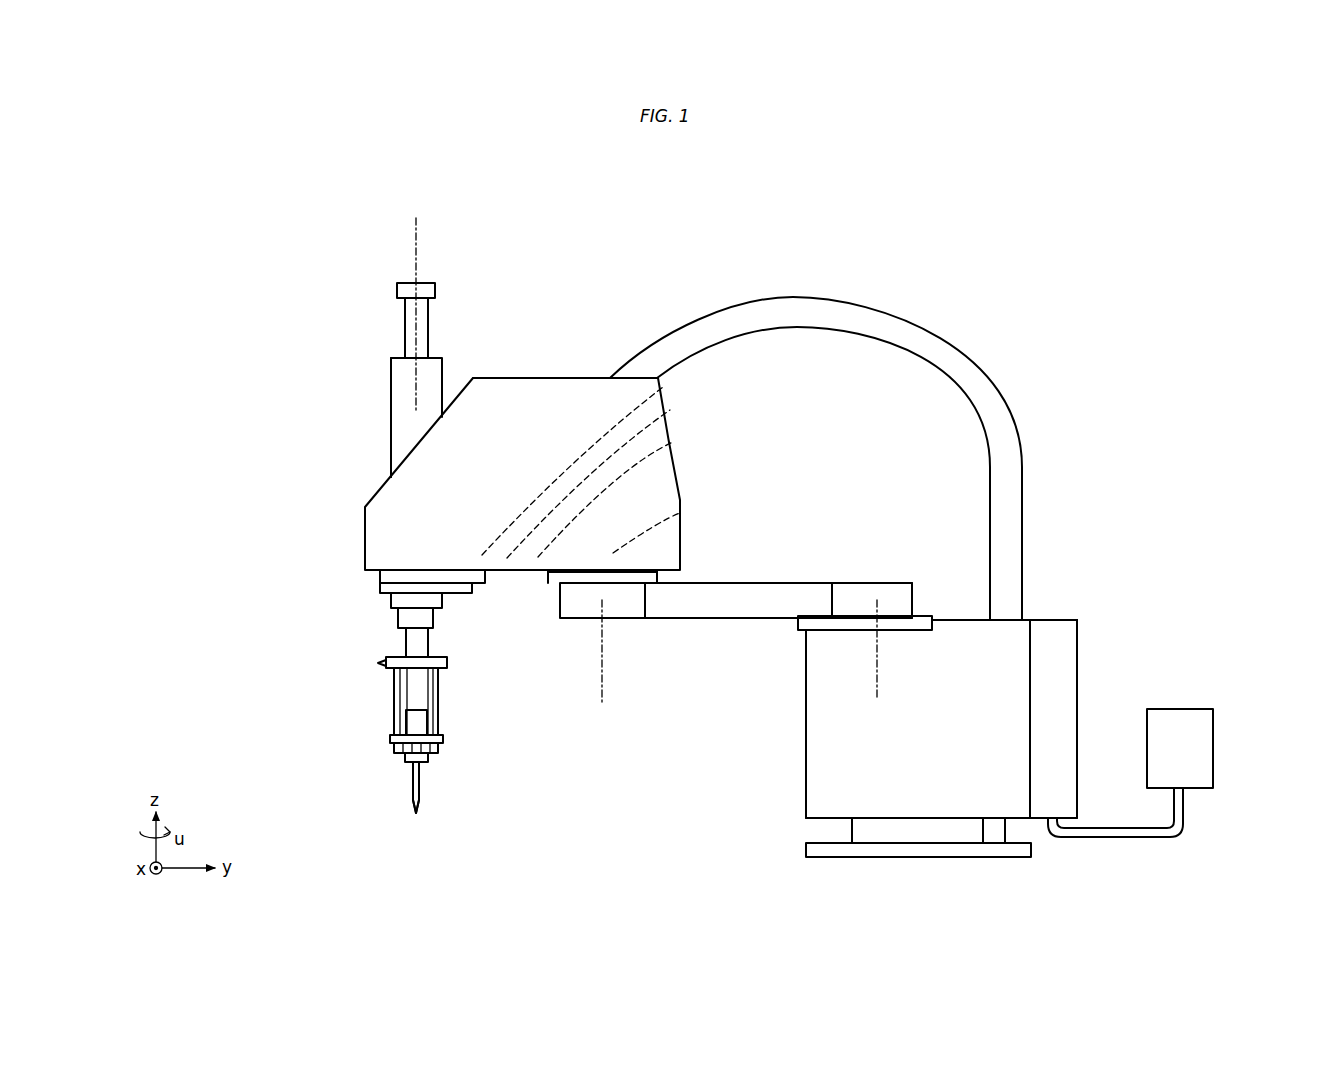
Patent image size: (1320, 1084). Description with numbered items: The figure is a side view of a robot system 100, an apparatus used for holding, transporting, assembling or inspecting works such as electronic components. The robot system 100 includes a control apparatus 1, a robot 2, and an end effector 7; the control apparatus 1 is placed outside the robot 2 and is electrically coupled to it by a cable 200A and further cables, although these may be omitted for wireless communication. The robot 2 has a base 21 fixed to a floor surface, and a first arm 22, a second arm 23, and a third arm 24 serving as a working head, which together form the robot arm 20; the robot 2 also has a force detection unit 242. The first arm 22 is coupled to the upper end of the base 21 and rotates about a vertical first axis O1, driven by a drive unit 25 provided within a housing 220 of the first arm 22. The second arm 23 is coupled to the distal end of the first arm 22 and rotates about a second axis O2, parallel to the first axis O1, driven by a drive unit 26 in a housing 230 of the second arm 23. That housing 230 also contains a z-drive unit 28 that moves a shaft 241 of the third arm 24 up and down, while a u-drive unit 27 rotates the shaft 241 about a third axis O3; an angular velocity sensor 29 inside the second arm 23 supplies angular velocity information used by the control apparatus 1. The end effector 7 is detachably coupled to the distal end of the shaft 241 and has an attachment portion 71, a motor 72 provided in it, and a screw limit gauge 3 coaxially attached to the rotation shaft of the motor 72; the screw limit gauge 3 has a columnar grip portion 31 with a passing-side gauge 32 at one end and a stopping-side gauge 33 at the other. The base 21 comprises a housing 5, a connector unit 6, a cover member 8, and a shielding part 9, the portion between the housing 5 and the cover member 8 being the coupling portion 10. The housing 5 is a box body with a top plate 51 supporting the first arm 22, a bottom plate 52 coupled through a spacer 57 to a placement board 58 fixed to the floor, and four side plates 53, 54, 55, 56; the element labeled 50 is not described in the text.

The control apparatus 1 is at (1195, 619).
The robot 2 is at (619, 270).
The robot arm 20 is at (748, 212).
The base 21 is at (806, 795).
The first arm 22 is at (685, 600).
The second arm 23 is at (468, 448).
The third arm 24 is at (405, 318).
The shaft 241 is at (404, 335).
The force detection unit 242 is at (413, 507).
The drive unit 25 is at (885, 595).
The drive unit 26 is at (680, 513).
The u-drive unit 27 is at (673, 442).
The z-drive unit 28 is at (670, 410).
The angular velocity sensor 29 is at (663, 387).
The housing 220 is at (803, 600).
The housing 230 is at (511, 374).
The screw limit gauge 3 is at (407, 766).
The grip portion 31 is at (412, 787).
The passing-side gauge 32 is at (414, 806).
The stopping-side gauge 33 is at (420, 780).
The housing 5 is at (800, 812).
The control unit 50 is at (968, 727).
The top plate 51 is at (962, 618).
The bottom plate 52 is at (1005, 820).
The side plate 53 is at (806, 683).
The side plate 54 is at (823, 648).
The side plate 55 is at (1033, 645).
The side plate 56 is at (840, 758).
The spacer 57 is at (915, 830).
The placement board 58 is at (958, 857).
The connector unit 6 is at (1033, 768).
The end effector 7 is at (456, 660).
The attachment portion 71 is at (456, 738).
The motor 72 is at (410, 723).
The cover member 8 is at (1077, 663).
The shielding part 9 is at (1077, 630).
The coupling portion 10 is at (1030, 617).
The robot system 100 is at (960, 232).
The cable 200A is at (1107, 838).
The first axis O1 is at (877, 692).
The second axis O2 is at (602, 648).
The third axis O3 is at (417, 230).